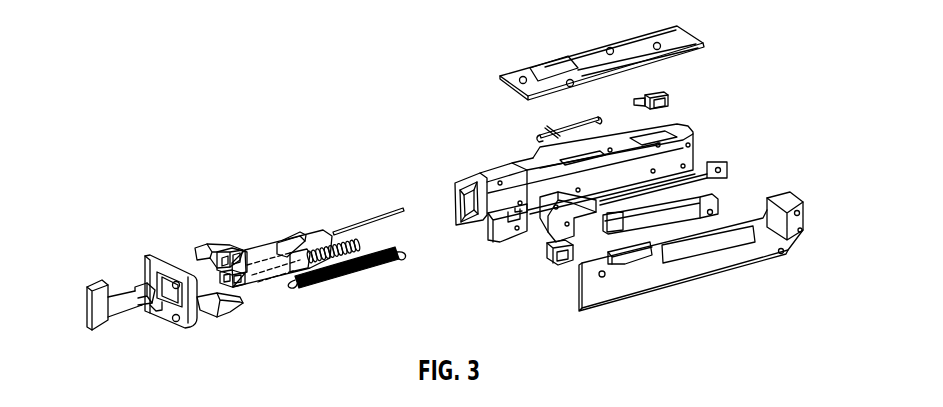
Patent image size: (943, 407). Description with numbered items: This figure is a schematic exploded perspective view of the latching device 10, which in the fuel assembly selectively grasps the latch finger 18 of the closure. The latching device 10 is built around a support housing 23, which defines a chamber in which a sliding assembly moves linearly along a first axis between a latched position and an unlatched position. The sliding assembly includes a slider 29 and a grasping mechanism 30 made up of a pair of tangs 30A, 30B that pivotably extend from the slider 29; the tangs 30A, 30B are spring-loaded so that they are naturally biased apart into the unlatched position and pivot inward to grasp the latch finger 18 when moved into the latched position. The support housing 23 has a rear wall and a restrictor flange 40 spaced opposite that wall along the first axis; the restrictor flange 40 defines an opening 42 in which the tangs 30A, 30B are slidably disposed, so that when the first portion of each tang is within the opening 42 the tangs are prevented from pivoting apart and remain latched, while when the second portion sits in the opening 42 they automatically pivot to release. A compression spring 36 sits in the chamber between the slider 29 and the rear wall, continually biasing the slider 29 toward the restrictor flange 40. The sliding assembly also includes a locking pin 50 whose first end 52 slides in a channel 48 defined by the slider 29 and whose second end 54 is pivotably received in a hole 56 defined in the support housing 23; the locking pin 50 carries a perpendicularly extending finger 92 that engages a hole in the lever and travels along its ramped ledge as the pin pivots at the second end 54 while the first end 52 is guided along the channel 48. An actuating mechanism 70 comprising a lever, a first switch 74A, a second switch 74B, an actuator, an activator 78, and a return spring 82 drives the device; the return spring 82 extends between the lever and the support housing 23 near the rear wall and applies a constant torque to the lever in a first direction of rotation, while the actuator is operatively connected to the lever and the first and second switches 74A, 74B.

The latching device 10 is at (60, 230).
The latch finger 18 is at (100, 310).
The support housing 23 is at (485, 178).
The slider 29 is at (267, 247).
The grasping mechanism 30 is at (215, 235).
The tang 30A is at (207, 247).
The tang 30B is at (217, 313).
The compression spring 36 is at (357, 242).
The restrictor flange 40 is at (152, 257).
The opening 42 is at (155, 315).
The channel 48 is at (303, 232).
The locking pin 50 is at (563, 120).
The first end 52 is at (533, 137).
The second end 54 is at (598, 125).
The hole 56 is at (611, 147).
The actuating mechanism 70 is at (550, 231).
The first switch 74A is at (667, 93).
The second switch 74B is at (557, 263).
The activator 78 is at (367, 220).
The return spring 82 is at (357, 277).
The finger 92 is at (550, 128).